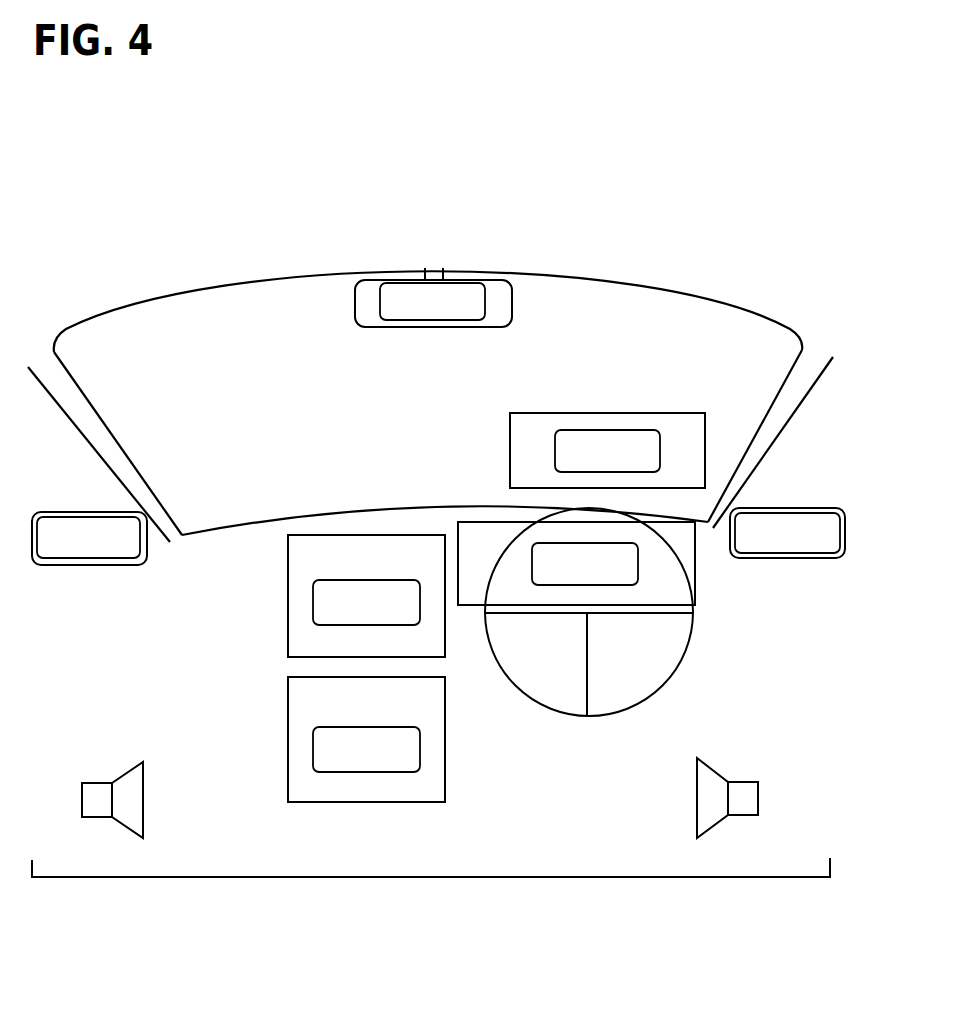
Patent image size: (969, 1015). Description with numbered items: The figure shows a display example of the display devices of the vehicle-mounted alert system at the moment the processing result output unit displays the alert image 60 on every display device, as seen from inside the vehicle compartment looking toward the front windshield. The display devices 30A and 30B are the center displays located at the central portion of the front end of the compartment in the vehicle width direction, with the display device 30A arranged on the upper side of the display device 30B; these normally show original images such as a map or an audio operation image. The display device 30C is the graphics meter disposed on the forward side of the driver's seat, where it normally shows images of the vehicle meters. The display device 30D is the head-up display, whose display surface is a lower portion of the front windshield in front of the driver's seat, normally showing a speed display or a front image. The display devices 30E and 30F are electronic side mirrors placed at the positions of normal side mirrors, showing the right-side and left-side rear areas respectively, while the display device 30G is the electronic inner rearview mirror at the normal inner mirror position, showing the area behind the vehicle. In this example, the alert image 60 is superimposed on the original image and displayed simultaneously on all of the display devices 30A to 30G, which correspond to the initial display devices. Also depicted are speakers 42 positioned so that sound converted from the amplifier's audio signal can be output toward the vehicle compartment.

The display device 30A is at (288, 547).
The display device 30B is at (288, 689).
The display device 30C is at (698, 553).
The display device 30D is at (662, 413).
The display device 30E is at (793, 508).
The display device 30F is at (72, 512).
The display device 30G is at (477, 280).
The alert image 60 is at (381, 298).
The speaker 42 is at (128, 772).